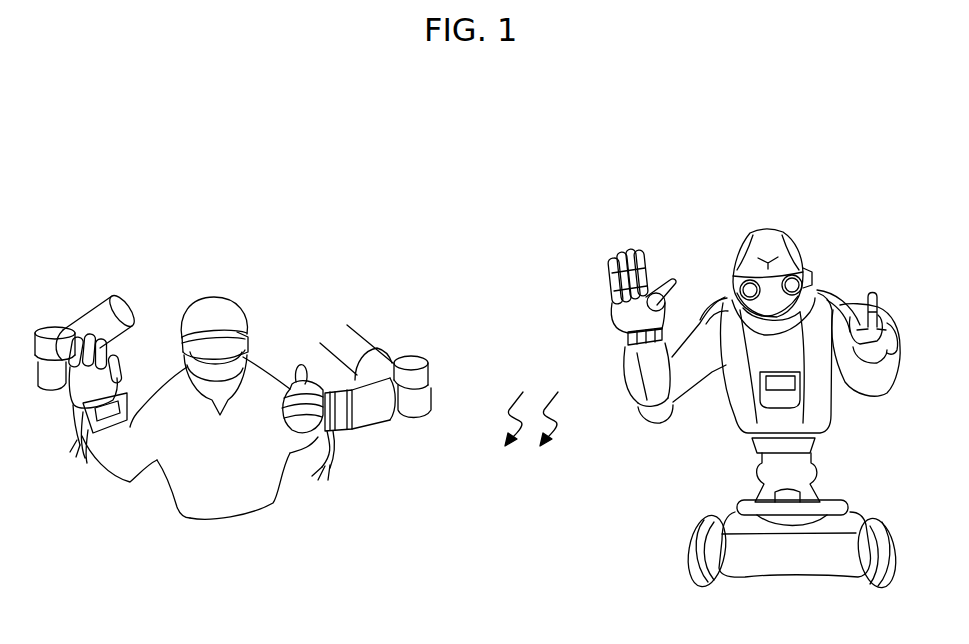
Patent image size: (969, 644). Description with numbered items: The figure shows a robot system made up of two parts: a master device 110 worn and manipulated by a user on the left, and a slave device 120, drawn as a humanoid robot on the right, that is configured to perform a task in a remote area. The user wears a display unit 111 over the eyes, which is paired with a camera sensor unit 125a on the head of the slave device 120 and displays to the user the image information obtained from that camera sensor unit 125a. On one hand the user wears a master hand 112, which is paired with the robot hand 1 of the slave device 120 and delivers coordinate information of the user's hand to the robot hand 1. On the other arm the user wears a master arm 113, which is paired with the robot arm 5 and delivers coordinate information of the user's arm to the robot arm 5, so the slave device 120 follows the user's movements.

The master device 110 is at (204, 274).
The display unit 111 is at (248, 328).
The master hand 112 is at (58, 403).
The master arm 113 is at (360, 417).
The slave device 120 is at (744, 213).
The camera sensor unit 125a is at (801, 270).
The robot hand 1 is at (616, 255).
The robot arm 5 is at (657, 390).